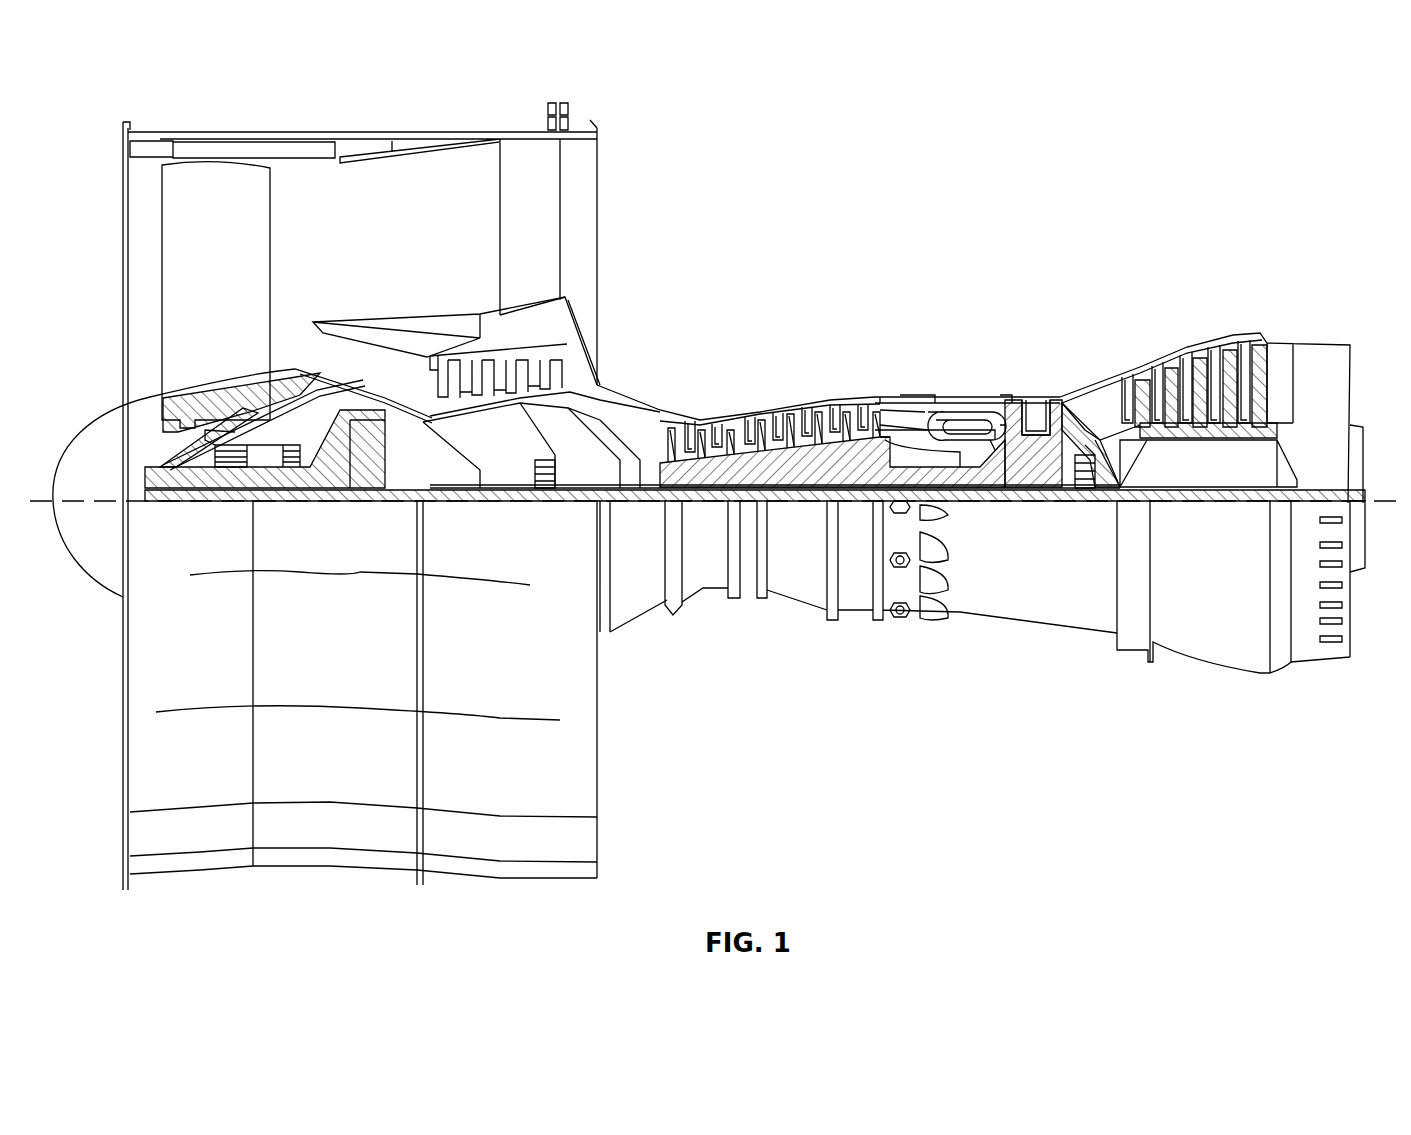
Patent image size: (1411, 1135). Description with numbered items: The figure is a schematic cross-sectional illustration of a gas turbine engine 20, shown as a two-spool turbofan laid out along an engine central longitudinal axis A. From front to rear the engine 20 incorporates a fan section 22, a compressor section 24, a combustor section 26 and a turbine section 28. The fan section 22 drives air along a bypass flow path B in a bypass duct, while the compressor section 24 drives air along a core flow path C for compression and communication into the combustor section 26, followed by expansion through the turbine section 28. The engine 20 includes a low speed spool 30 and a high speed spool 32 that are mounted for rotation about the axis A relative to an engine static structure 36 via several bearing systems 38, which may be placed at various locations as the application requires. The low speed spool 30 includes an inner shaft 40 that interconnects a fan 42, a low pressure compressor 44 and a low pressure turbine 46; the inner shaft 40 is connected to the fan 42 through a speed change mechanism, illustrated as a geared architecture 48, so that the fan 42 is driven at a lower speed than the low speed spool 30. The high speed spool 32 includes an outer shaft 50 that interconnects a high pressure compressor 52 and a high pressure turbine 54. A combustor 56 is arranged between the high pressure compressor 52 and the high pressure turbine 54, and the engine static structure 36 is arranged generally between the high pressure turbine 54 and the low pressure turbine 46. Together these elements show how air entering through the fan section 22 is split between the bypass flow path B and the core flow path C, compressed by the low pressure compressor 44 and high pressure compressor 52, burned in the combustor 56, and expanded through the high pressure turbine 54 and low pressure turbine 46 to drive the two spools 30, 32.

The gas turbine engine 20 is at (1170, 166).
The fan section 22 is at (236, 122).
The compressor section 24 is at (787, 357).
The combustor section 26 is at (953, 357).
The turbine section 28 is at (1100, 337).
The low speed spool 30 is at (820, 506).
The high speed spool 32 is at (873, 455).
The engine static structure 36 is at (858, 623).
The bearing systems 38 is at (226, 468).
The inner shaft 40 is at (613, 497).
The fan 42 is at (240, 259).
The low pressure compressor 44 is at (512, 378).
The low pressure turbine 46 is at (1203, 360).
The geared architecture 48 is at (357, 462).
The outer shaft 50 is at (972, 487).
The high pressure compressor 52 is at (777, 470).
The high pressure turbine 54 is at (1038, 395).
The combustor 56 is at (962, 418).
The engine central longitudinal axis A is at (1370, 500).
The bypass flow path B is at (448, 230).
The core flow path C is at (316, 360).